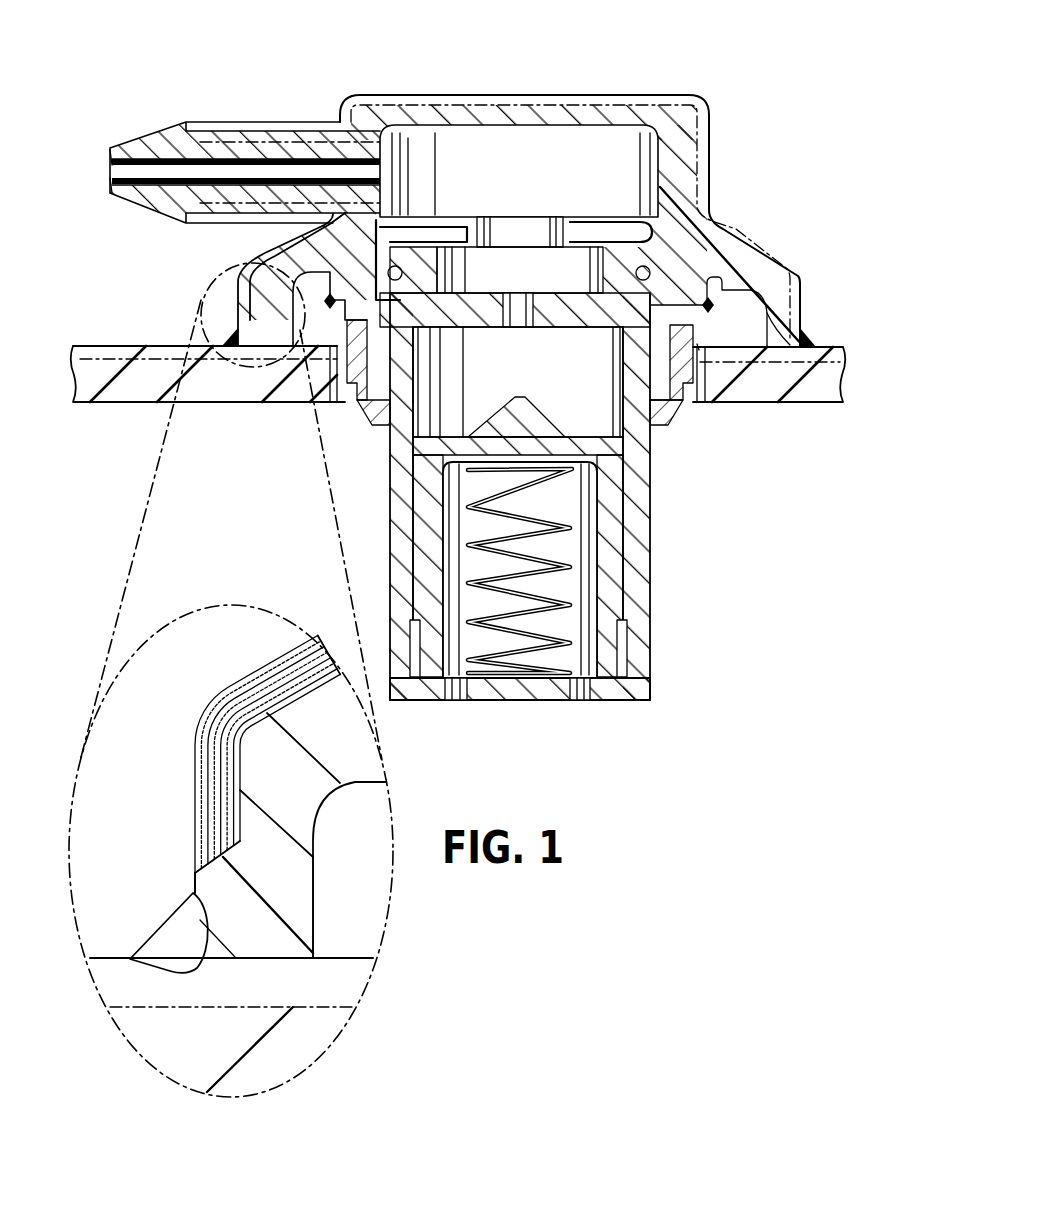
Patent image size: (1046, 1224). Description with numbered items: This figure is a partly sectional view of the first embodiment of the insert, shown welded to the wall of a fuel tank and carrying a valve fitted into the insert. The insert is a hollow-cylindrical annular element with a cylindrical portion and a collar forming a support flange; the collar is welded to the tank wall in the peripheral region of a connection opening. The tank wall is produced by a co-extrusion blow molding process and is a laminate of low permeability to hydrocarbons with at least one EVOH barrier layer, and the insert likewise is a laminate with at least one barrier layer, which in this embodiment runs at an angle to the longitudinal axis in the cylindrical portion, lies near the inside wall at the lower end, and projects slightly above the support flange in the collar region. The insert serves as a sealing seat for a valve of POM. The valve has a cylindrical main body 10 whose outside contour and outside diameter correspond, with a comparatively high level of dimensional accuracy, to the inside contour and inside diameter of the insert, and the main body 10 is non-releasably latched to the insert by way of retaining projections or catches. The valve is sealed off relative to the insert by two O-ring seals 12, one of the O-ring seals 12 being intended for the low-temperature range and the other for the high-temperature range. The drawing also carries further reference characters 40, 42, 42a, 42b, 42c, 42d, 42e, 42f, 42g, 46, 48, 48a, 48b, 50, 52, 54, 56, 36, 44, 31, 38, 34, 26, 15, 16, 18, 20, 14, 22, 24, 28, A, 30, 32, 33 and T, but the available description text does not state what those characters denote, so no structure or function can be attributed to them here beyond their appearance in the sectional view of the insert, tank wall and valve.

The cylindrical main body 10 is at (520, 60).
The cap 40 is at (645, 72).
The multilayer shell 42 is at (710, 184).
The shell layer 42a is at (250, 673).
The shell layer 42b is at (213, 700).
The shell layer 42c is at (204, 747).
The shell layer 42d is at (204, 783).
The shell layer 42e is at (278, 657).
The shell layer 42f is at (278, 709).
The shell layer 42g is at (292, 686).
The flange 46 is at (812, 274).
The weld 48 is at (762, 307).
The weld interface 48a is at (193, 879).
The weld fillet 48b is at (807, 358).
The cavity 50 is at (529, 177).
The fuel tube 52 is at (178, 122).
The tube outer layer 54 is at (110, 150).
The tube inner layer 56 is at (112, 192).
The skirt 36 is at (325, 225).
The weld 44 is at (348, 325).
The lip seal 31 is at (622, 217).
The valve stem 38 is at (530, 247).
The valve disc 34 is at (612, 281).
The valve housing top 26 is at (525, 310).
The chamber 15 is at (491, 409).
The plunger 16 is at (563, 410).
The cone 18 is at (517, 396).
The spring 20 is at (573, 574).
The O-ring seals 12 is at (674, 590).
The leg 14 is at (650, 637).
The bottom plate 22 is at (652, 690).
The opening 24 is at (583, 700).
The clip 28 is at (698, 370).
The gap A is at (698, 344).
The shoulder 30 is at (690, 430).
The foot 32 is at (667, 430).
The foot 33 is at (378, 428).
The tank wall T is at (822, 396).